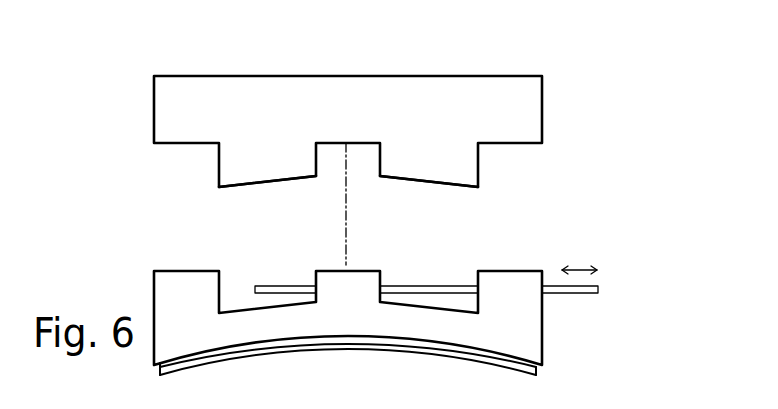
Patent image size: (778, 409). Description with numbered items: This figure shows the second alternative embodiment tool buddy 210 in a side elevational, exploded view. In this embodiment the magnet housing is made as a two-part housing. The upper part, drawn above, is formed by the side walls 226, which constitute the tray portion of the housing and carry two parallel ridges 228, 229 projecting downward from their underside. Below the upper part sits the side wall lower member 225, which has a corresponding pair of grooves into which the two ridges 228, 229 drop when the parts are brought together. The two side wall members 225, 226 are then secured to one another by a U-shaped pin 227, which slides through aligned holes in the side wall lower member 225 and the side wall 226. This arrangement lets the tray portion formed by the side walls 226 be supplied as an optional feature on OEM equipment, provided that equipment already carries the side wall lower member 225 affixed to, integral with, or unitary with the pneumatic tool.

The tool buddy 210 is at (591, 54).
The side wall lower member 225 is at (530, 327).
The side wall 226 is at (532, 113).
The U-shaped pin 227 is at (598, 289).
The ridge 228 is at (250, 170).
The ridge 229 is at (423, 165).